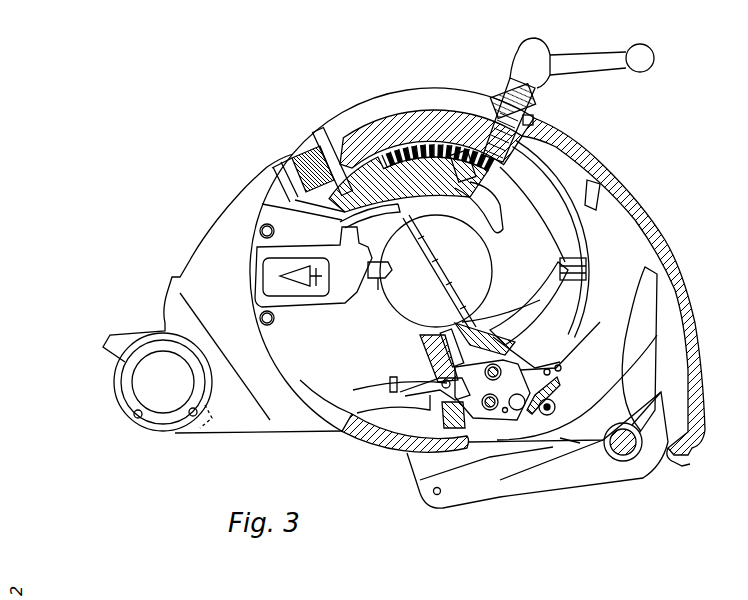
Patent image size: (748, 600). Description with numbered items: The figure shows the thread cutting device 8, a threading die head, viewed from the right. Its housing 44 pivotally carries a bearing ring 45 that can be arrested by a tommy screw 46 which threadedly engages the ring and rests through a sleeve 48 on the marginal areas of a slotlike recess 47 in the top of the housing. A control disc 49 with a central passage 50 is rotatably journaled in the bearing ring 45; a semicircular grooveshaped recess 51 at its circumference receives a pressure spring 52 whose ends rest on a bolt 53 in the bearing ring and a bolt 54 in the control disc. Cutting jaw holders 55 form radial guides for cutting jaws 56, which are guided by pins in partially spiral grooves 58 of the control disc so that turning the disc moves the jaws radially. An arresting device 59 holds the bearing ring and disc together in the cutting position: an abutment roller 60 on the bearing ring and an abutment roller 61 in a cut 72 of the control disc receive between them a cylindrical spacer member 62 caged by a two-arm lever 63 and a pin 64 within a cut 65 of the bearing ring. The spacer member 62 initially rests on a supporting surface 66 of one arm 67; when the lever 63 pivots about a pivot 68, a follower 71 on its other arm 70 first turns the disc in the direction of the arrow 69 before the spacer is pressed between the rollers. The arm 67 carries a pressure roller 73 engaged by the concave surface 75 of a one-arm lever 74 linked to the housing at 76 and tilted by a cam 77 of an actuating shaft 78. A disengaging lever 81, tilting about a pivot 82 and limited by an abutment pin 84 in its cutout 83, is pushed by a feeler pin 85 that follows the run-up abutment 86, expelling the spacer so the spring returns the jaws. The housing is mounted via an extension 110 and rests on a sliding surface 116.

The thread cutting device 8 is at (670, 230).
The housing 44 is at (637, 210).
The bearing ring 45 is at (387, 123).
The tommy screw 46 is at (533, 118).
The slotlike recess 47 is at (463, 98).
The sleeve 48 is at (532, 105).
The control disc 49 is at (590, 178).
The passage 50 is at (491, 246).
The semicircular grooveshaped recess 51 is at (345, 140).
The pressure spring 52 is at (430, 147).
The bolt 53 is at (305, 182).
The bolt 54 is at (478, 168).
The cutting jaw holder 55 is at (340, 300).
The cutting jaw 56 is at (368, 280).
The groove 58 is at (502, 221).
The arresting device 59 is at (437, 463).
The abutment roller 60 is at (490, 410).
The abutment roller 61 is at (516, 350).
The spacer member 62 is at (518, 410).
The two-arm lever 63 is at (563, 380).
The pin 64 is at (505, 413).
The cut 65 is at (477, 417).
The supporting surface 66 is at (520, 408).
The arm 67 is at (555, 400).
The pivot 68 is at (560, 373).
The arrow 69 is at (552, 327).
The arm 70 is at (560, 363).
The follower 71 is at (533, 365).
The cut 72 is at (390, 385).
The pressure roller 73 is at (548, 415).
The one-arm lever 74 is at (578, 442).
The concave surface 75 is at (630, 337).
The link point 76 is at (433, 498).
The cam 77 is at (663, 390).
The actuating shaft 78 is at (630, 453).
The disengaging lever 81 is at (470, 325).
The pivot 82 is at (462, 347).
The cutout 83 is at (458, 391).
The abutment pin 84 is at (442, 383).
The feeler pin 85 is at (447, 330).
The run-up abutment 86 is at (418, 240).
The extension 110 is at (122, 403).
The sliding surface 116 is at (685, 455).